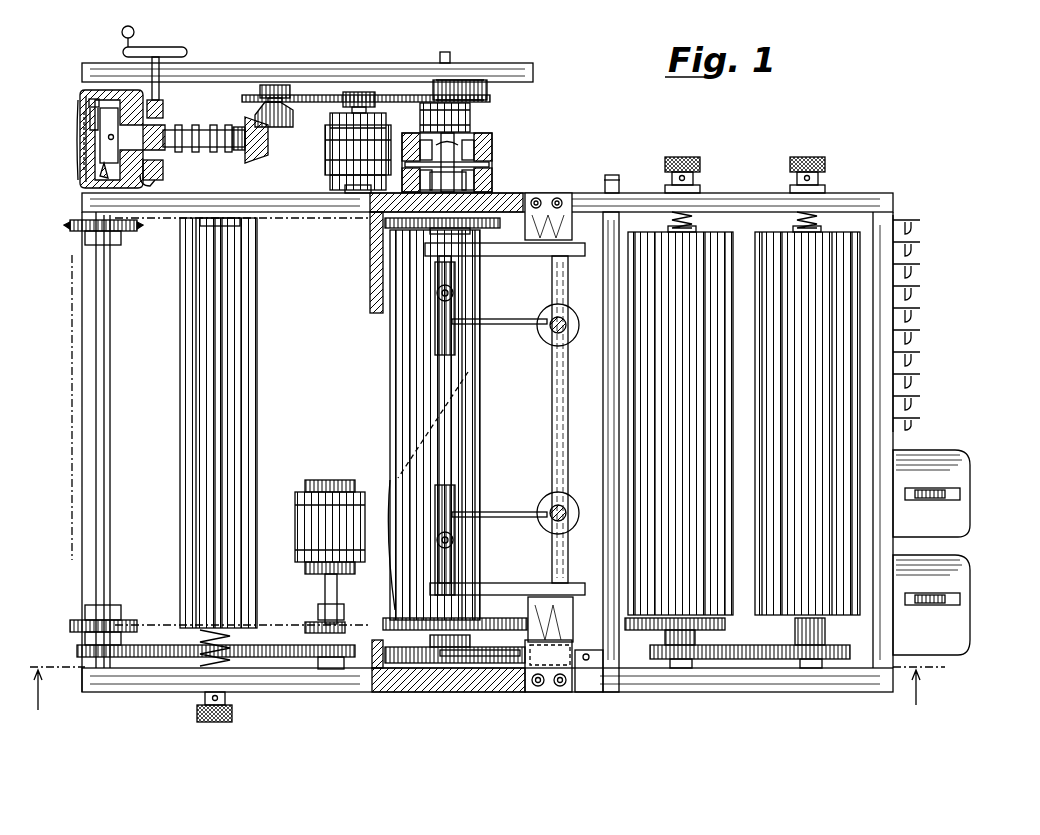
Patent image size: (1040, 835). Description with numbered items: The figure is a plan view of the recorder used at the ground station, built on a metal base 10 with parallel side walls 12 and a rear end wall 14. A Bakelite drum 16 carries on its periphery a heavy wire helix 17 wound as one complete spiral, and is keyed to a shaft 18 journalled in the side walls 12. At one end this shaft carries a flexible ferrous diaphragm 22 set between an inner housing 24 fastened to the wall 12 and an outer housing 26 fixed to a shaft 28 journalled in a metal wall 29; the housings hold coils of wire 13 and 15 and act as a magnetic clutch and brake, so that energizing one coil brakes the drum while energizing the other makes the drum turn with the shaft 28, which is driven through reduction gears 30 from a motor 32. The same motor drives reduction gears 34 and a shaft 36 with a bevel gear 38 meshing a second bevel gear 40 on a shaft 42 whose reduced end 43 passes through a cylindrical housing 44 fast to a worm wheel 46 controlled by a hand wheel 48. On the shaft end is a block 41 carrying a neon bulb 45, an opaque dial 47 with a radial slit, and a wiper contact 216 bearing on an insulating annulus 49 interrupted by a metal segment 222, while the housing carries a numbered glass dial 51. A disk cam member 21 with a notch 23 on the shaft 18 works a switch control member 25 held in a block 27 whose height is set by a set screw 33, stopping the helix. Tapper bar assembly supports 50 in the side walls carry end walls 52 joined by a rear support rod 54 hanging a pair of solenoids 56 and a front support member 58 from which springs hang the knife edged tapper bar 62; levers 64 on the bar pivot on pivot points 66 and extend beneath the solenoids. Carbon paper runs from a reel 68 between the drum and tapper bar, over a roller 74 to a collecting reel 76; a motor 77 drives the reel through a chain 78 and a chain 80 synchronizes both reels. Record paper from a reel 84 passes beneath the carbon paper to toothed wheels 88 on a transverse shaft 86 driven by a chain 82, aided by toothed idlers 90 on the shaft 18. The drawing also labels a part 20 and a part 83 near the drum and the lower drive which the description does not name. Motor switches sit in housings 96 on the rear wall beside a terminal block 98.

The metal base 10 is at (130, 266).
The side walls 12 is at (723, 196).
The coil of wire 13 is at (468, 130).
The end wall 14 is at (884, 440).
The coil of wire 15 is at (540, 172).
The drum 16 is at (412, 336).
The helix 17 is at (388, 480).
The shaft 18 is at (456, 170).
The gear 20 is at (500, 223).
The disk cam member 21 is at (425, 658).
The flexible diaphragm 22 is at (490, 164).
The notch 23 is at (430, 672).
The inner housing 24 is at (466, 182).
The switch control member 25 is at (472, 658).
The outer housing 26 is at (496, 140).
The block 27 is at (552, 652).
The shaft 28 is at (448, 62).
The metal wall 29 is at (518, 72).
The reduction gears 30 is at (378, 92).
The motor 32 is at (382, 136).
The set screw 33 is at (583, 694).
The reduction gears 34 is at (302, 94).
The shaft 36 is at (272, 84).
The bevel gear 38 is at (284, 128).
The second bevel gear 40 is at (262, 156).
The block 41 is at (103, 150).
The shaft 42 is at (238, 152).
The reduced end of shaft 43 is at (178, 138).
The cylindrical housing 44 is at (90, 94).
The neon bulb 45 is at (92, 122).
The worm wheel 46 is at (160, 176).
The opaque dial 47 is at (88, 142).
The hand wheel 48 is at (168, 48).
The annulus 49 is at (90, 104).
The tapper bar assembly supports 50 is at (558, 236).
The glass dial 51 is at (78, 168).
The end walls 52 is at (574, 256).
The rear support rod 54 is at (570, 292).
The solenoids 56 is at (546, 338).
The front support member 58 is at (436, 350).
The tapper bar 62 is at (440, 372).
The levers 64 is at (515, 296).
The pivot points 66 is at (548, 322).
The reel 68 is at (718, 238).
The roller 74 is at (616, 224).
The collecting reel 76 is at (830, 606).
The motor 77 is at (298, 556).
The chain 78 is at (722, 624).
The chain 80 is at (742, 650).
The chain 82 is at (262, 644).
The gear 83 is at (164, 644).
The reel 84 is at (195, 442).
The transverse shaft 86 is at (112, 480).
The toothed wheels 88 is at (70, 228).
The toothed idlers 90 is at (388, 620).
The housings 96 is at (936, 572).
The terminal block 98 is at (930, 335).
The wiper contact 216 is at (152, 184).
The metal segment 222 is at (104, 178).